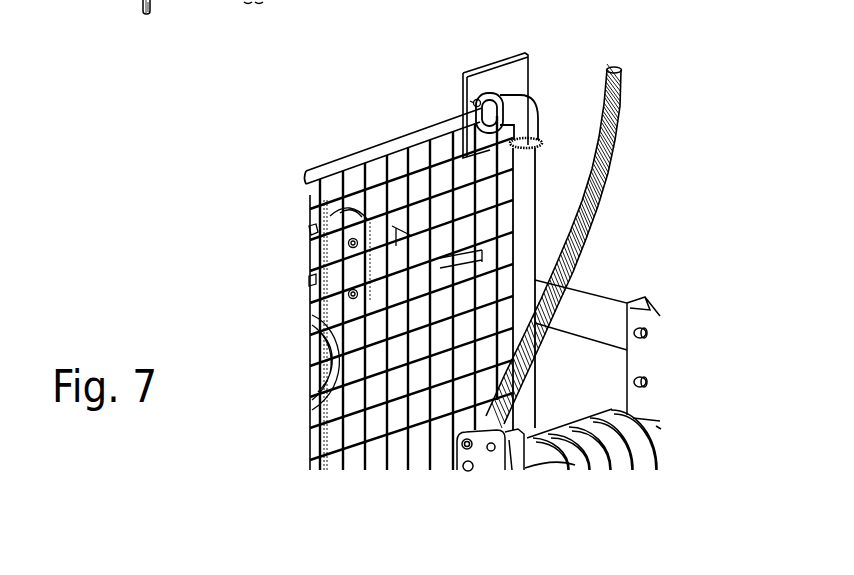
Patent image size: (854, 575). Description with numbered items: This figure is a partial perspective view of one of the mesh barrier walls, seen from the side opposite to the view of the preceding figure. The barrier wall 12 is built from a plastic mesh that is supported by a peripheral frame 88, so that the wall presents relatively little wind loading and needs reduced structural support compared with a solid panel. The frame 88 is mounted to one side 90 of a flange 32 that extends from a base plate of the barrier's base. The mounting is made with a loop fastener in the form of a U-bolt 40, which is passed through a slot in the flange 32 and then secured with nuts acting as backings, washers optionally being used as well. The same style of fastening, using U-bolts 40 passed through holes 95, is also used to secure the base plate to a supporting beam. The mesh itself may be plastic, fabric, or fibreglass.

The barrier wall 12 is at (352, 162).
The peripheral frame 88 is at (409, 146).
The U-bolt 40 is at (475, 78).
The holes 95 is at (484, 100).
The flange 32 is at (512, 76).
The side of flange 90 is at (510, 85).